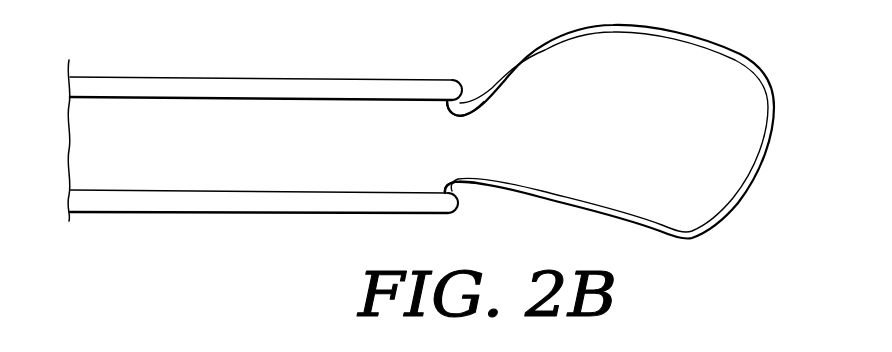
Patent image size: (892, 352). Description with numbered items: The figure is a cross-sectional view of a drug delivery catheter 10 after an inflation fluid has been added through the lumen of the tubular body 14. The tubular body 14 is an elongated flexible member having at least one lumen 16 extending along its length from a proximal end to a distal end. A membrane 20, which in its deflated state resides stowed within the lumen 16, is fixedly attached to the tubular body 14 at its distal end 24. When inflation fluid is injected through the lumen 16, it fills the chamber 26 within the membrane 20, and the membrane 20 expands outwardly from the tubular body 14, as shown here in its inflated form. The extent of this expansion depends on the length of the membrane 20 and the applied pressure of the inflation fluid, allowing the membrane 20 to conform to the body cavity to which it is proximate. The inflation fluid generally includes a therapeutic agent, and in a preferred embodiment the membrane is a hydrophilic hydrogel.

The drug delivery catheter 10 is at (421, 133).
The tubular body 14 is at (280, 78).
The lumen 16 is at (166, 155).
The membrane 20 is at (385, 205).
The distal end 24 is at (470, 97).
The chamber 26 is at (692, 87).